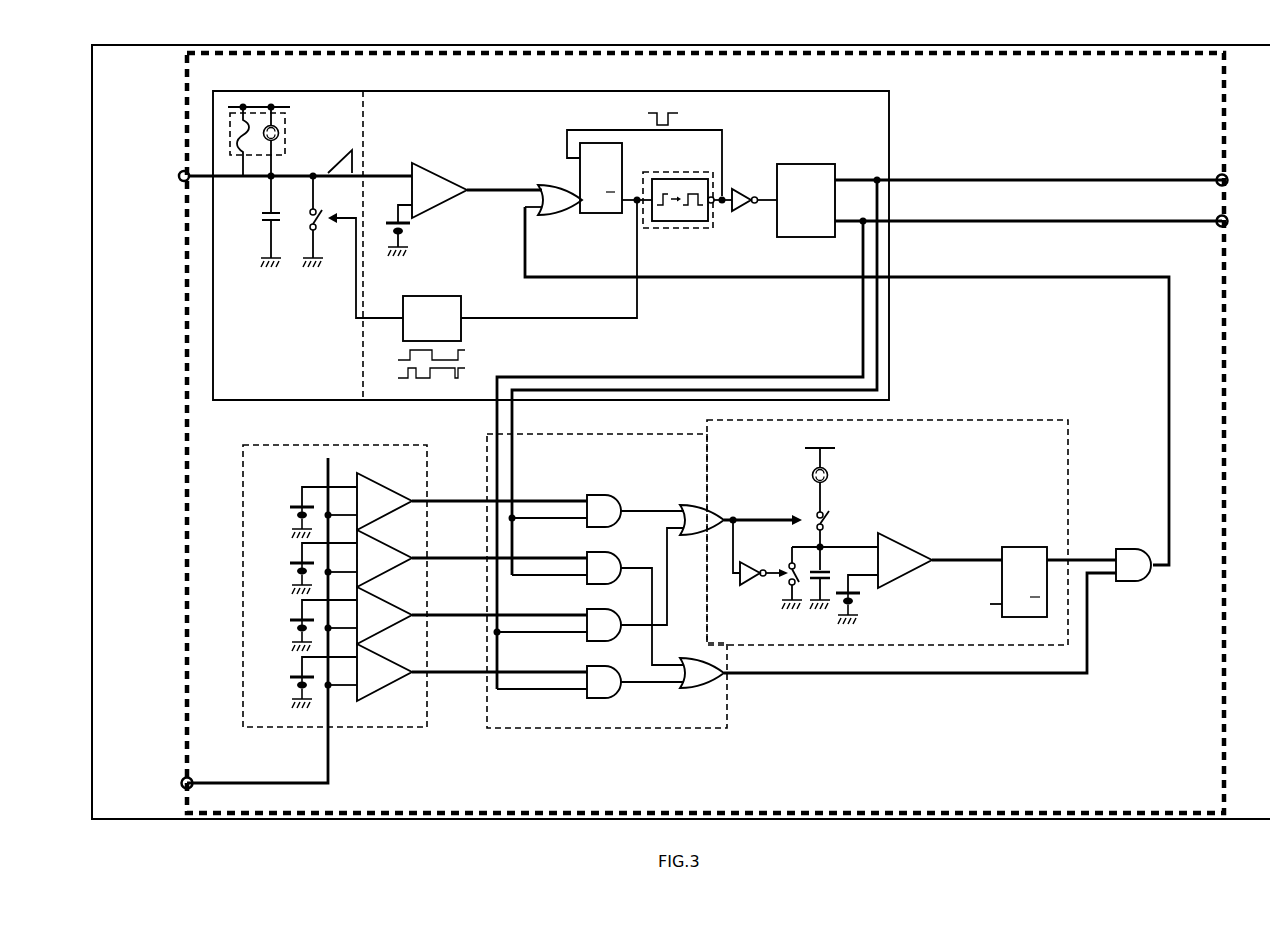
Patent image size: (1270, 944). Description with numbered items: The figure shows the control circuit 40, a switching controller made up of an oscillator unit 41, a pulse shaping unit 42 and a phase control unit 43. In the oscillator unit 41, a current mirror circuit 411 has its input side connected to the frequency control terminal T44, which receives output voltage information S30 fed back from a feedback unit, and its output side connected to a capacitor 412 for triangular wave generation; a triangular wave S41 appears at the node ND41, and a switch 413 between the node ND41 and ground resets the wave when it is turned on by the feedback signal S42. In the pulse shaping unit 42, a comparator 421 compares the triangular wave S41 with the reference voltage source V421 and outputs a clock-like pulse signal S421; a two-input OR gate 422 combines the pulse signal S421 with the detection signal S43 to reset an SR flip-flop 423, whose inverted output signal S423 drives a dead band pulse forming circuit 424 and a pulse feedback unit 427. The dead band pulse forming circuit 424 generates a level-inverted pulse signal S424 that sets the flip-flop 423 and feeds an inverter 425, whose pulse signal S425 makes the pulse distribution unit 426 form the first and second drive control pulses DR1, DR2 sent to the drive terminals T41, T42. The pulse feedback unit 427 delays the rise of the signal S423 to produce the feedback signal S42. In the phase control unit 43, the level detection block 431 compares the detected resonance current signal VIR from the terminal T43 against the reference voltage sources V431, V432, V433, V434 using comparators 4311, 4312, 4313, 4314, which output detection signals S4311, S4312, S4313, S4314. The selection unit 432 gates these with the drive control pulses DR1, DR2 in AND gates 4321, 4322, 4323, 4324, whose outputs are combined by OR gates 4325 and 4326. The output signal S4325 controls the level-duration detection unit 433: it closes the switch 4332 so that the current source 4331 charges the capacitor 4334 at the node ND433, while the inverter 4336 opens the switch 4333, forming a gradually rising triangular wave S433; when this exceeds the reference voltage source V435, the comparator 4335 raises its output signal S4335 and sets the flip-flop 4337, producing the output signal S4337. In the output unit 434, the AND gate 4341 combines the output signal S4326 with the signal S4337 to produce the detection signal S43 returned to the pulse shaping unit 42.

The control circuit 40 is at (821, 44).
The oscillator unit 41 is at (268, 90).
The pulse shaping unit 42 is at (618, 91).
The phase control unit 43 is at (955, 730).
The current mirror circuit 411 is at (230, 131).
The capacitor 412 is at (268, 224).
The switch 413 is at (320, 214).
The comparator 421 is at (440, 172).
The OR gate 422 is at (551, 185).
The SR flip-flop 423 is at (622, 150).
The dead band pulse forming circuit 424 is at (713, 228).
The inverter 425 is at (737, 187).
The pulse distribution unit 426 is at (818, 164).
The pulse feedback unit 427 is at (461, 301).
The level detection block 431 is at (276, 445).
The selection unit 432 is at (617, 728).
The level-duration detection unit 433 is at (978, 420).
The output unit 434 is at (1131, 612).
The comparator 4311 is at (402, 480).
The comparator 4312 is at (402, 537).
The comparator 4313 is at (402, 594).
The comparator 4314 is at (402, 651).
The AND gate 4321 is at (594, 495).
The AND gate 4322 is at (594, 552).
The AND gate 4323 is at (594, 608).
The AND gate 4324 is at (594, 664).
The OR gate 4325 is at (690, 505).
The OR gate 4326 is at (696, 690).
The current source 4331 is at (828, 476).
The switch 4332 is at (812, 516).
The switch 4333 is at (783, 585).
The capacitor 4334 is at (838, 579).
The comparator 4335 is at (905, 542).
The inverter 4336 is at (753, 585).
The flip-flop 4337 is at (1022, 547).
The AND gate 4341 is at (1136, 581).
The drive terminal T41 is at (1226, 176).
The drive terminal T42 is at (1226, 228).
The terminal T43 is at (180, 788).
The frequency control terminal T44 is at (182, 184).
The output voltage information S30 is at (194, 185).
The triangular wave S41 is at (318, 172).
The feedback signal S42 is at (355, 298).
The detection signal S43 is at (1169, 422).
The pulse signal S421 is at (497, 194).
The pulse signal S423 is at (636, 205).
The pulse signal S424 is at (760, 202).
The pulse signal S425 is at (758, 198).
The triangular wave S433 is at (845, 545).
The first positive detection signal S4311 is at (455, 500).
The second positive detection signal S4312 is at (455, 557).
The first negative detection signal S4313 is at (455, 614).
The second negative detection signal S4314 is at (455, 671).
The OR output signal S4325 is at (731, 515).
The output signal S4326 is at (920, 646).
The output signal S4335 is at (972, 558).
The output signal S4337 is at (1098, 560).
The first drive control pulse DR1 is at (990, 179).
The second drive control pulse DR2 is at (990, 222).
The node ND41 is at (270, 180).
The node ND433 is at (815, 546).
The detected resonance current signal VIR is at (257, 620).
The reference voltage source V421 is at (406, 232).
The first positive reference voltage source V431 is at (292, 521).
The second positive reference voltage source V432 is at (292, 577).
The first negative reference voltage source V433 is at (292, 634).
The second negative reference voltage source V434 is at (292, 691).
The reference voltage source V435 is at (867, 611).